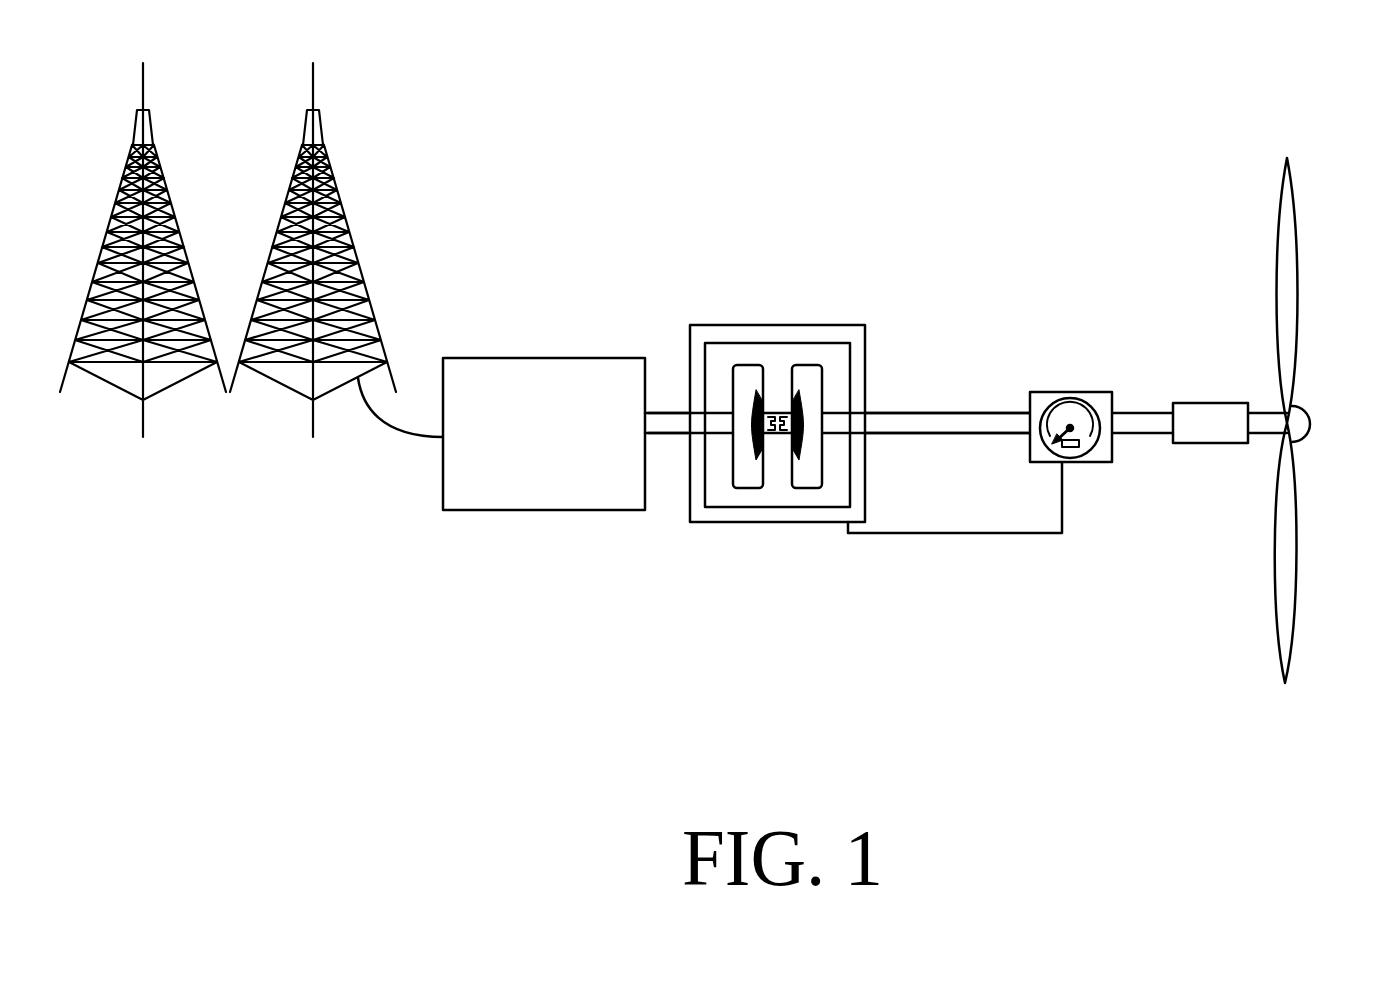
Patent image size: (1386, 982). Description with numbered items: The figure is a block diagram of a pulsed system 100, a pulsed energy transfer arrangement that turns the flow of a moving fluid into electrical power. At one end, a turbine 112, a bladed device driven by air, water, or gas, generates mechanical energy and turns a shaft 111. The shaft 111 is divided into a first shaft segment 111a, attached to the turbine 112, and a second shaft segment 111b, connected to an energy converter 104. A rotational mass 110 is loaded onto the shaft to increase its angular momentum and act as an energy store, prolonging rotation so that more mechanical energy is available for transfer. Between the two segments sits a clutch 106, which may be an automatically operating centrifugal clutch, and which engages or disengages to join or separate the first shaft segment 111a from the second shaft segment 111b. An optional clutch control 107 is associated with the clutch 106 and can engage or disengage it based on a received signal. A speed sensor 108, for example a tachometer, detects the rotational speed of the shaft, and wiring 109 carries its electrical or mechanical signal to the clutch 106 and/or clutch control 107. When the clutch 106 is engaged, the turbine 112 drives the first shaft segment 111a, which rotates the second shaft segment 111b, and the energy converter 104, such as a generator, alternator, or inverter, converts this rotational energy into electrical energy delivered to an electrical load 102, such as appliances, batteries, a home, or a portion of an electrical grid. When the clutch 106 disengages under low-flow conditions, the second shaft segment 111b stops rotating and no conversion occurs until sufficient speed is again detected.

The pulsed system 100 is at (788, 26).
The electrical load 102 is at (333, 203).
The energy converter 104 is at (518, 358).
The clutch 106 is at (805, 488).
The clutch control 107 is at (843, 325).
The speed sensor 108 is at (1103, 392).
The wiring 109 is at (1045, 533).
The rotational mass 110 is at (1237, 403).
The shaft 111 is at (960, 413).
The first shaft segment 111a is at (980, 435).
The second shaft segment 111b is at (676, 433).
The turbine 112 is at (1293, 648).